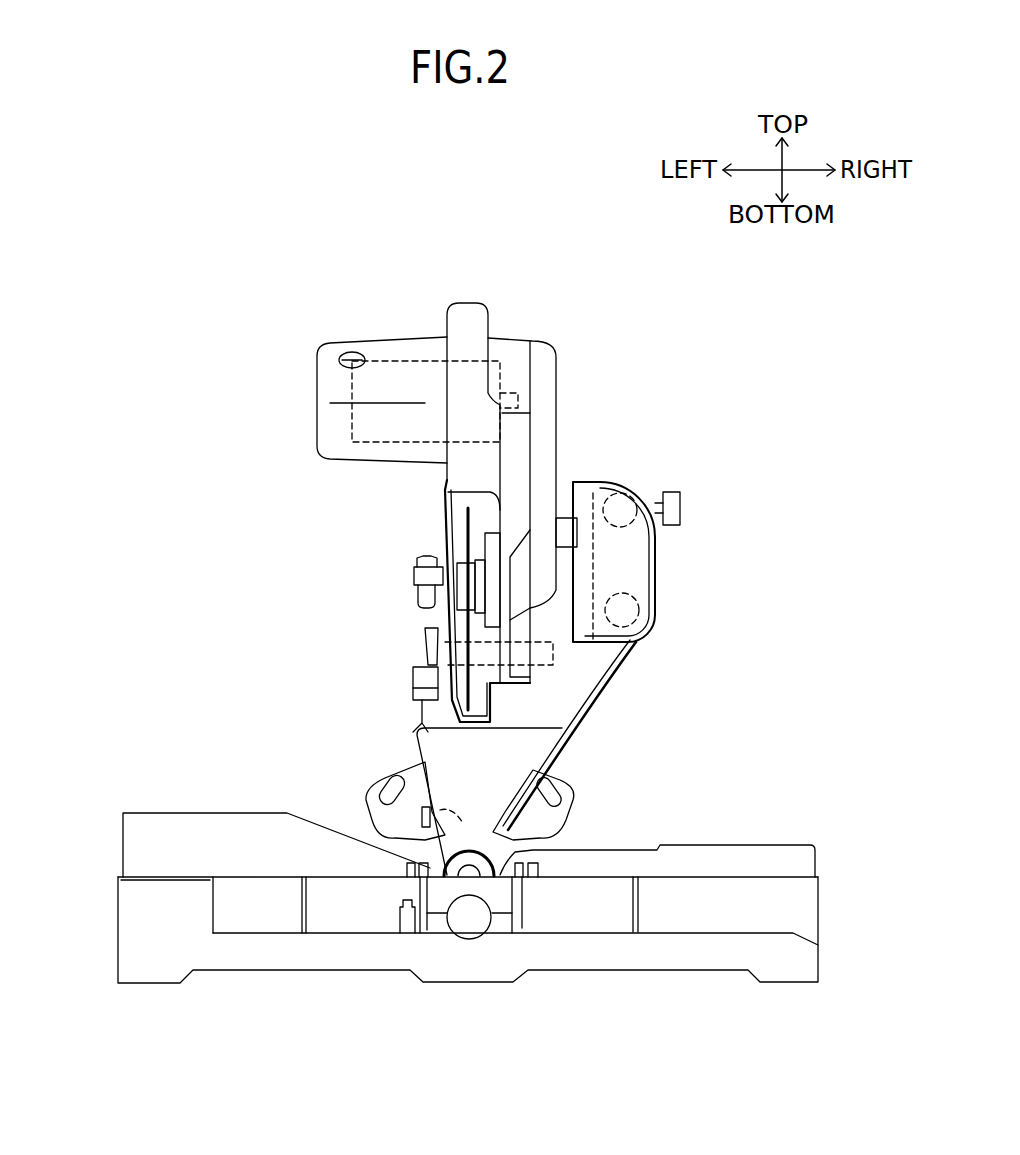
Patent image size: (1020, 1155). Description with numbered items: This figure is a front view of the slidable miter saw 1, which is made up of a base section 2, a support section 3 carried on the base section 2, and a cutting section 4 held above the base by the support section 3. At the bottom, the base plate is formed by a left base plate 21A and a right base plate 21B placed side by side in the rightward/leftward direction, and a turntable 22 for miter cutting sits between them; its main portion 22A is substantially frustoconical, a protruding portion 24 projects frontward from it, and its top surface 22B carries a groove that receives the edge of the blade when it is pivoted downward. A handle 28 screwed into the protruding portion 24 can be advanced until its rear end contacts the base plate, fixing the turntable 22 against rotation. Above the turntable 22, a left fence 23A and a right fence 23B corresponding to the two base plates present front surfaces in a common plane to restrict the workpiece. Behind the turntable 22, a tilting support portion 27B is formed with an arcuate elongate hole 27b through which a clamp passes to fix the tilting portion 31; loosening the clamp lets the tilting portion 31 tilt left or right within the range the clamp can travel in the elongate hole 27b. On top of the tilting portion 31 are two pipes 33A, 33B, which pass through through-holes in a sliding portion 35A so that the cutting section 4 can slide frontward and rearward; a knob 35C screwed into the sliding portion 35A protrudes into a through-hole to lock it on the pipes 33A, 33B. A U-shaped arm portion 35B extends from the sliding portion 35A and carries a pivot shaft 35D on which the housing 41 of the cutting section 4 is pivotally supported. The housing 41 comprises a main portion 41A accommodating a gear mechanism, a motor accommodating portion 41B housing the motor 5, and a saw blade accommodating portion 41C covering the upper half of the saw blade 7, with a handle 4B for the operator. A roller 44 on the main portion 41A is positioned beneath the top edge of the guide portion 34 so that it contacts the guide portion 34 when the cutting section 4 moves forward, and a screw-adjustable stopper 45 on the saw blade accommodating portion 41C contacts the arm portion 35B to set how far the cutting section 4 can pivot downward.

The miter saw 1 is at (714, 411).
The base section 2 is at (268, 988).
The support section 3 is at (376, 708).
The cutting section 4 is at (610, 387).
The handle 4B is at (476, 320).
The motor 5 is at (367, 424).
The saw blade 7 is at (465, 537).
The left base plate 21A is at (135, 925).
The right base plate 21B is at (800, 902).
The turntable 22 is at (585, 925).
The main portion 22A is at (350, 912).
The top surface 22B is at (337, 877).
The left fence 23A is at (135, 843).
The right fence 23B is at (771, 848).
The protruding portion 24 is at (493, 932).
The tilting support portion 27B is at (563, 805).
The elongate hole 27b is at (545, 773).
The handle 28 is at (469, 920).
The tilting portion 31 is at (537, 748).
The pipe 33A is at (640, 490).
The pipe 33B is at (650, 600).
The guide portion 34 is at (641, 565).
The sliding portion 35A is at (588, 656).
The arm portion 35B is at (432, 630).
The knob 35C is at (683, 508).
The pivot shaft 35D is at (432, 662).
The housing 41 is at (557, 355).
The main portion 41A is at (556, 447).
The motor accommodating portion 41B is at (392, 340).
The saw blade accommodating portion 41C is at (447, 507).
The roller 44 is at (567, 532).
The stopper 45 is at (425, 580).